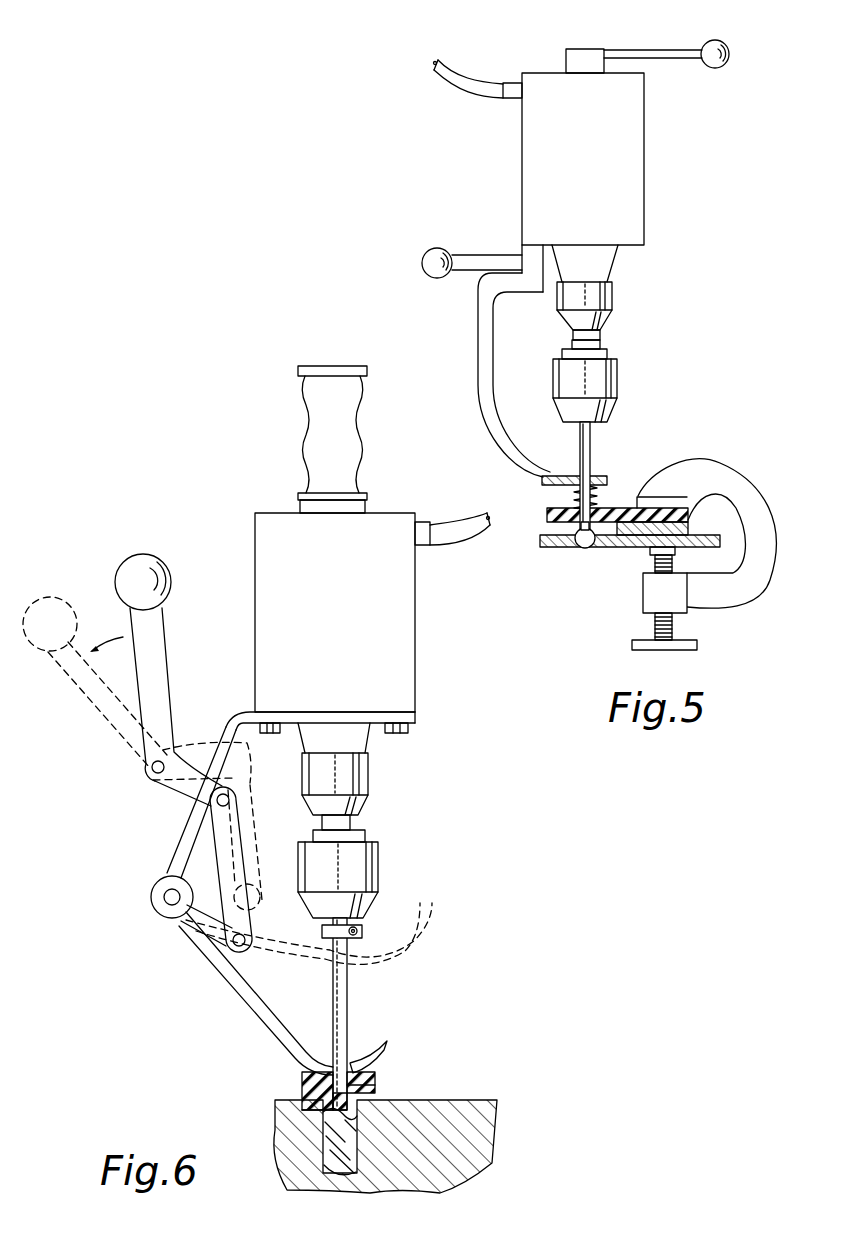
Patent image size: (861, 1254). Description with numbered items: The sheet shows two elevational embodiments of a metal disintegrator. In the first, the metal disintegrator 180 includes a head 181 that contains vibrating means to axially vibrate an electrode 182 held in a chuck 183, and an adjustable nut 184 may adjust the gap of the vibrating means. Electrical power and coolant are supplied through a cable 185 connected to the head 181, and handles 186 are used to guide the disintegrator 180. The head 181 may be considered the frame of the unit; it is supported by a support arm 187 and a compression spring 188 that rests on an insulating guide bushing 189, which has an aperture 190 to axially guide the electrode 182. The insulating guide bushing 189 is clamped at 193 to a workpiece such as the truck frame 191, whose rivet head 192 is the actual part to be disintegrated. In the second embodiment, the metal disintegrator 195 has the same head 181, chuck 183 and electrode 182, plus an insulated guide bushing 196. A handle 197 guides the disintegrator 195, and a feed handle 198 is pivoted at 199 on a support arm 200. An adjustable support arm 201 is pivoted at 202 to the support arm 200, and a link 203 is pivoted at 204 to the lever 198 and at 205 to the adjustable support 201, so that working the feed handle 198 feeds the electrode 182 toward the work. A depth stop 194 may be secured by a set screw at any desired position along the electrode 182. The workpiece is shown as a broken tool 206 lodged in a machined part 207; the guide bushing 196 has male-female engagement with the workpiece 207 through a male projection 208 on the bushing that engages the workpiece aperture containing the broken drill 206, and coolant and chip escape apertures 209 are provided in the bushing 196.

In FIG. 5, the metal disintegrator 180 is at (607, 331).
In FIG. 5, the head 181 is at (640, 221).
In FIG. 6, the head 181 is at (416, 630).
In FIG. 5, the electrode 182 is at (592, 447).
In FIG. 6, the electrode 182 is at (348, 1005).
In FIG. 5, the chuck 183 is at (620, 383).
In FIG. 6, the chuck 183 is at (381, 866).
In FIG. 5, the adjustable nut 184 is at (614, 294).
In FIG. 6, the adjustable nut 184 is at (334, 782).
In FIG. 5, the cable 185 is at (482, 79).
In FIG. 6, the cable 185 is at (455, 512).
In FIG. 5, the handles 186 is at (664, 60).
In FIG. 5, the support arm 187 is at (477, 333).
In FIG. 5, the compression spring 188 is at (572, 492).
In FIG. 5, the insulating guide bushing 189 is at (625, 506).
In FIG. 5, the aperture 190 is at (548, 538).
In FIG. 5, the truck frame 191 is at (603, 548).
In FIG. 5, the rivet head 192 is at (578, 548).
In FIG. 5, the clamp 193 is at (720, 470).
In FIG. 6, the depth stop 194 is at (362, 930).
In FIG. 6, the metal disintegrator 195 is at (274, 779).
In FIG. 6, the insulated guide bushing 196 is at (300, 1078).
In FIG. 6, the handle 197 is at (305, 421).
In FIG. 6, the feed handle 198 is at (146, 554).
In FIG. 6, the pivot 199 is at (152, 778).
In FIG. 6, the support arm 200 is at (153, 878).
In FIG. 6, the adjustable support arm 201 is at (278, 1037).
In FIG. 6, the pivot 202 is at (171, 906).
In FIG. 6, the link 203 is at (213, 855).
In FIG. 6, the pivot 204 is at (190, 808).
In FIG. 6, the pivot 205 is at (236, 948).
In FIG. 6, the broken tool 206 is at (358, 1138).
In FIG. 6, the machined part 207 is at (465, 1102).
In FIG. 6, the male projection 208 is at (318, 1110).
In FIG. 6, the coolant and chip escape apertures 209 is at (370, 1093).